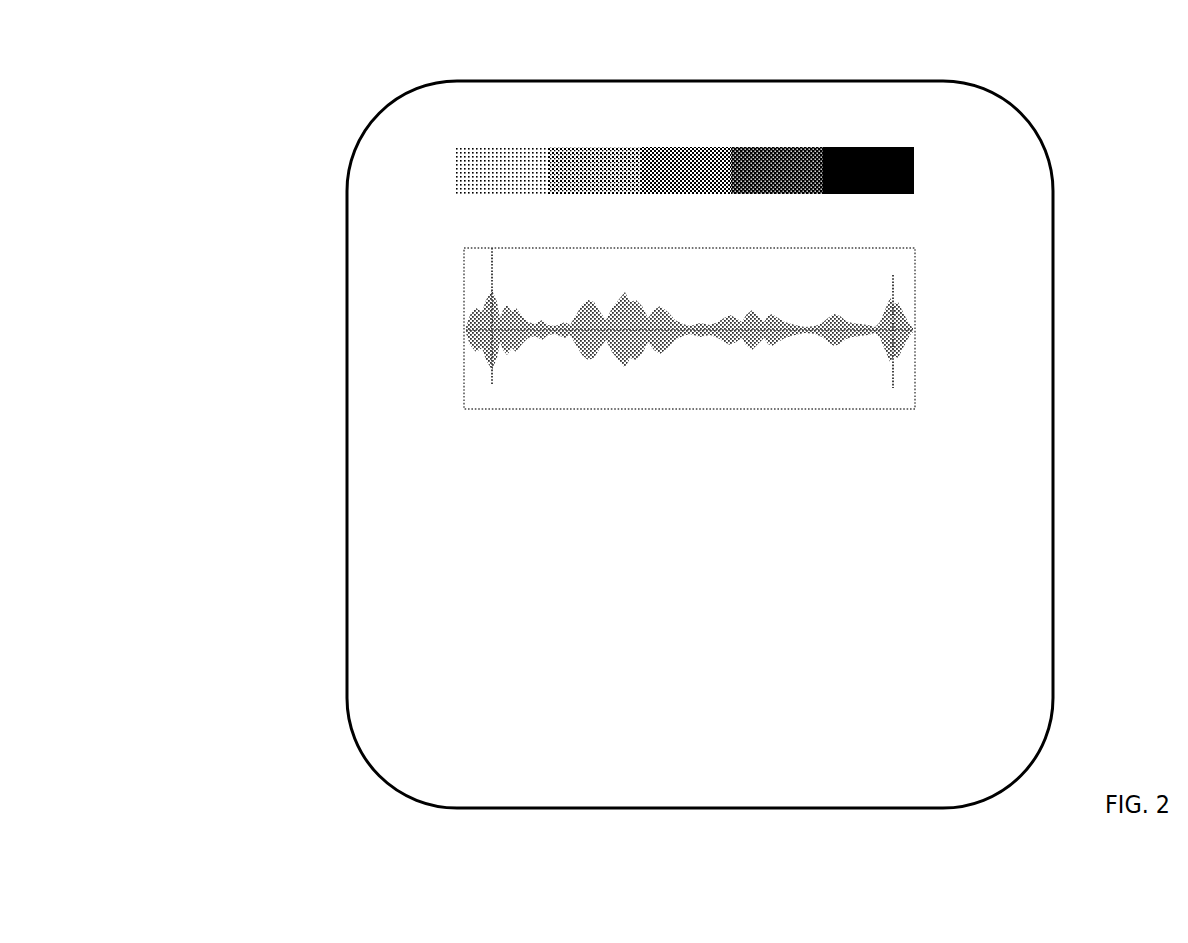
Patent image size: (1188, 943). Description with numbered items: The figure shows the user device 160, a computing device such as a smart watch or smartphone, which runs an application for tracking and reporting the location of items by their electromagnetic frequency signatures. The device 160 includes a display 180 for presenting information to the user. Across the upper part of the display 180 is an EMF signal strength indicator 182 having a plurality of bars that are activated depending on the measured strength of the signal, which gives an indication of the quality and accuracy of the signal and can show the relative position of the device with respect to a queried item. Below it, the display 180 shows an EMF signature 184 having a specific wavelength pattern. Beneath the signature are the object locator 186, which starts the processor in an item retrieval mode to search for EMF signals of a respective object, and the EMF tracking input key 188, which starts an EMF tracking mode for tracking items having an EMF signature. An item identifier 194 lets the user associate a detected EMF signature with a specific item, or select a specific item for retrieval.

The user device 160 is at (1017, 122).
The display 180 is at (432, 110).
The EMF signal strength indicator 182 is at (456, 172).
The EMF signature 184 is at (463, 322).
The object locator 186 is at (458, 548).
The EMF tracking input key 188 is at (455, 619).
The item identifier 194 is at (897, 550).